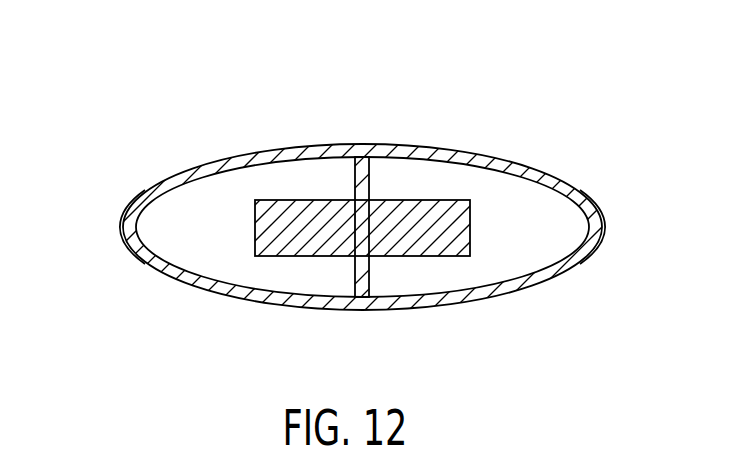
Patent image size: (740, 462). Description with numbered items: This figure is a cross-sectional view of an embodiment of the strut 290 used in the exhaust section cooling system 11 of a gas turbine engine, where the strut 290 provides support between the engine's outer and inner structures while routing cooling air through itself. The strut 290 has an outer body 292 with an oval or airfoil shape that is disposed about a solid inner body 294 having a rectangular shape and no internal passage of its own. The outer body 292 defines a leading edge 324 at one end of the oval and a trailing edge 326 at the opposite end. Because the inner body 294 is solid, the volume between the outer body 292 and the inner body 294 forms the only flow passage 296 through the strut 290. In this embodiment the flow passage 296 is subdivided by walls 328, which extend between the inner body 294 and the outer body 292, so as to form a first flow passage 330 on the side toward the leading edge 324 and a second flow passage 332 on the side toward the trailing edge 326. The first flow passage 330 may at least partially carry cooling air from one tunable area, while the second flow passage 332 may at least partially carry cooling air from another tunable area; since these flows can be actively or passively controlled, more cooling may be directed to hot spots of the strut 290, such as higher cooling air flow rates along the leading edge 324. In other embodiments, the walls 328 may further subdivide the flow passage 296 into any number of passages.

The strut 290 is at (459, 89).
The exhaust section cooling system 11 is at (555, 148).
The outer body 292 is at (329, 146).
The inner body 294 is at (429, 240).
The flow passage 296 is at (231, 280).
The leading edge 324 is at (128, 232).
The trailing edge 326 is at (597, 234).
The walls 328 is at (372, 163).
The first flow passage 330 is at (175, 243).
The second flow passage 332 is at (516, 243).